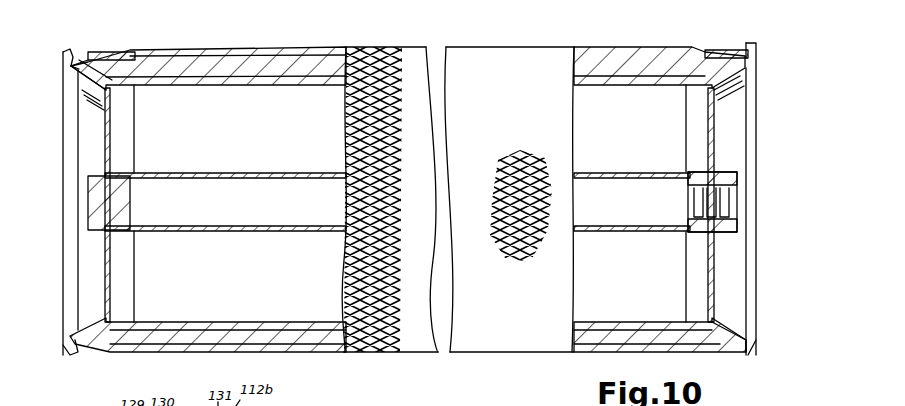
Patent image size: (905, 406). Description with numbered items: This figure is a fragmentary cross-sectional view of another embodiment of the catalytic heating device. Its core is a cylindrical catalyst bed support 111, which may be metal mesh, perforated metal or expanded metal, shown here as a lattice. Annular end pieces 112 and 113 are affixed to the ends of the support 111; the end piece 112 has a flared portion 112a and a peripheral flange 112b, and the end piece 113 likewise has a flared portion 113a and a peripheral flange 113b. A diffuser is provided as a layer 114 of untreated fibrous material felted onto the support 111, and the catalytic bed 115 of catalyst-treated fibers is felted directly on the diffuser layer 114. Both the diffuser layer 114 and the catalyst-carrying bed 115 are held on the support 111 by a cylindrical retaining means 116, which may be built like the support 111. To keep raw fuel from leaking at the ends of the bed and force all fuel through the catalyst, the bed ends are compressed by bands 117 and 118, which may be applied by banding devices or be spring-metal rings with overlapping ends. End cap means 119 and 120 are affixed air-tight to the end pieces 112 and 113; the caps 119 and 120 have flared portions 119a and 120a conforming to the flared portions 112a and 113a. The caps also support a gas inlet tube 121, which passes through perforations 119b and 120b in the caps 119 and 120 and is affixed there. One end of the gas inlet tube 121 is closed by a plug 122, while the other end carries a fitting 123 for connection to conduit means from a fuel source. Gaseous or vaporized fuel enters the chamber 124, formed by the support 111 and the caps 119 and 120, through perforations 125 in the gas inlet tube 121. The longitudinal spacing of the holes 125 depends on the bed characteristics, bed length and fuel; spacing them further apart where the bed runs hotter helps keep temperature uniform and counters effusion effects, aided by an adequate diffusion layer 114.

The cylindrical catalyst bed support 111 is at (203, 85).
The annular end piece 112 is at (127, 113).
The flared portion 112a is at (82, 60).
The peripheral flange 112b is at (67, 50).
The annular end piece 113 is at (688, 114).
The flared portion 113a is at (748, 70).
The peripheral flange 113b is at (752, 54).
The fibrous diffuser layer 114 is at (255, 72).
The catalytic bed 115 is at (320, 76).
The cylindrical retaining means 116 is at (212, 50).
The band 117 is at (112, 54).
The band 118 is at (735, 54).
The end cap means 119 is at (112, 144).
The flared portion 119a is at (97, 100).
The perforation 119b is at (113, 236).
The end cap means 120 is at (708, 153).
The flared portion 120a is at (732, 84).
The perforation 120b is at (712, 228).
The gas inlet tube 121 is at (600, 176).
The plug 122 is at (130, 206).
The fitting 123 is at (690, 194).
The chamber 124 is at (612, 293).
The perforations 125 is at (653, 179).